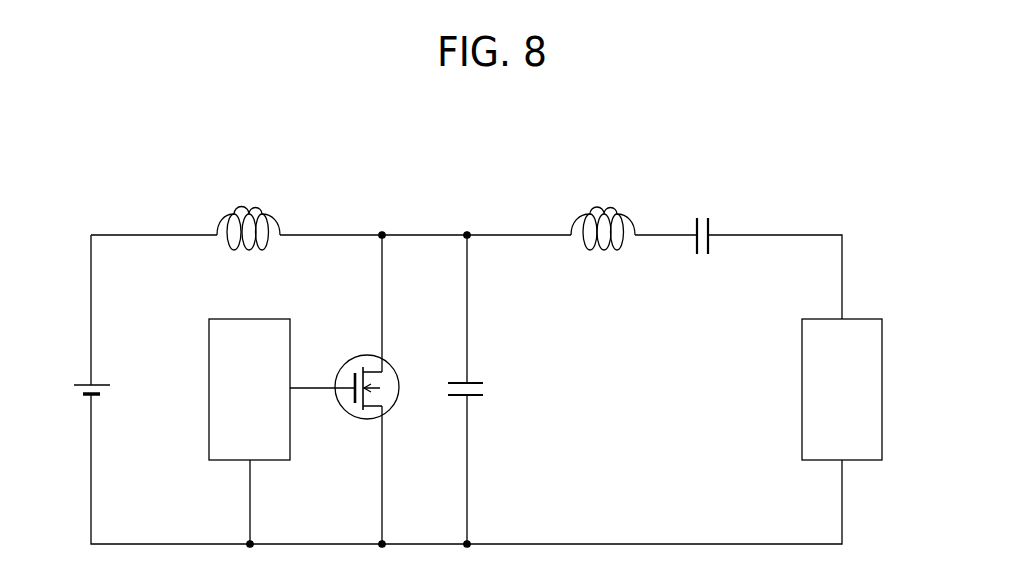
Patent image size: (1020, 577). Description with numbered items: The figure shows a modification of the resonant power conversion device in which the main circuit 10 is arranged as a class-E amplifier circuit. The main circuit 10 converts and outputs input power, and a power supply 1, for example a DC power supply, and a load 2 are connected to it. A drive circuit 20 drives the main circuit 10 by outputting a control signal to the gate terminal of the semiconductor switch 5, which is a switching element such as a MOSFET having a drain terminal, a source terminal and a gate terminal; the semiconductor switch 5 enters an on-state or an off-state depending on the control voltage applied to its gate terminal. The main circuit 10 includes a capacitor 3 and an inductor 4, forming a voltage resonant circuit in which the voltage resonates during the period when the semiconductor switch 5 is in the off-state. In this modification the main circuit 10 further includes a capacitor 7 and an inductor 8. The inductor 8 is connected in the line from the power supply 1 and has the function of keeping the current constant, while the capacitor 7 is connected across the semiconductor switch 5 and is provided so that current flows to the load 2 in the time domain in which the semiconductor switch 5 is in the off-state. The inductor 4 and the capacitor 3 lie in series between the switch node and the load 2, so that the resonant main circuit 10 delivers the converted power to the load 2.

The main circuit 10 is at (526, 210).
The inductor 8 is at (243, 212).
The inductor 4 is at (598, 212).
The capacitor 3 is at (703, 215).
The power supply 1 is at (105, 391).
The drive circuit 20 is at (235, 319).
The semiconductor switch 5 is at (365, 422).
The capacitor 7 is at (486, 388).
The load 2 is at (882, 383).